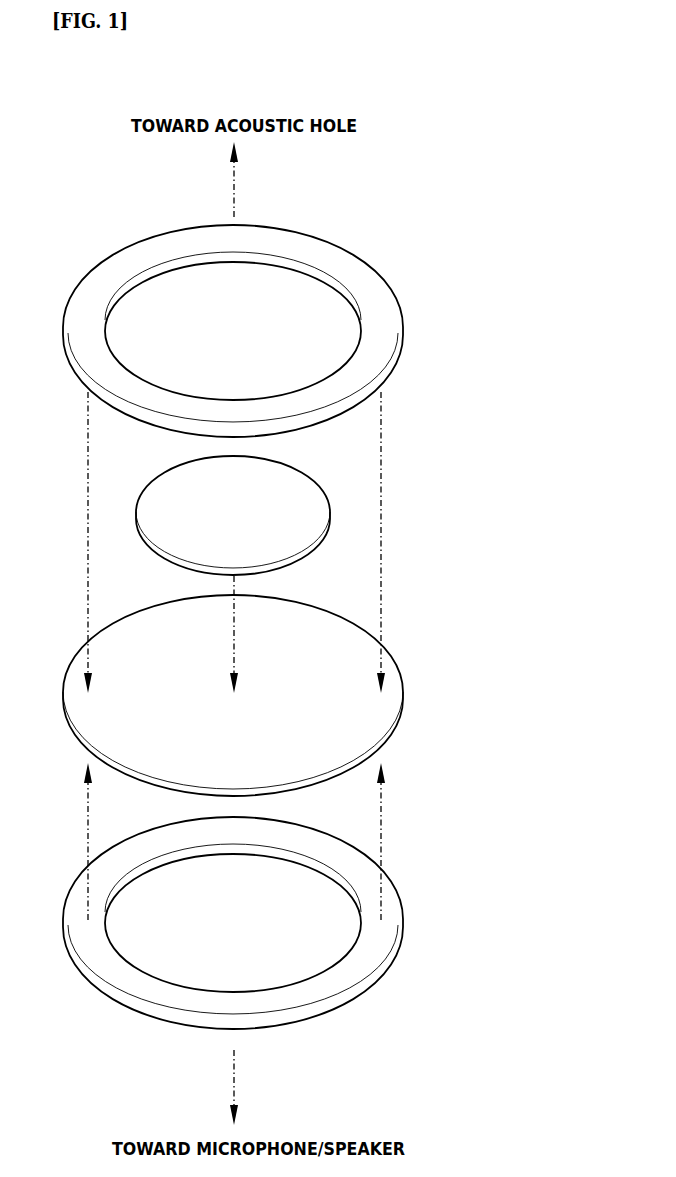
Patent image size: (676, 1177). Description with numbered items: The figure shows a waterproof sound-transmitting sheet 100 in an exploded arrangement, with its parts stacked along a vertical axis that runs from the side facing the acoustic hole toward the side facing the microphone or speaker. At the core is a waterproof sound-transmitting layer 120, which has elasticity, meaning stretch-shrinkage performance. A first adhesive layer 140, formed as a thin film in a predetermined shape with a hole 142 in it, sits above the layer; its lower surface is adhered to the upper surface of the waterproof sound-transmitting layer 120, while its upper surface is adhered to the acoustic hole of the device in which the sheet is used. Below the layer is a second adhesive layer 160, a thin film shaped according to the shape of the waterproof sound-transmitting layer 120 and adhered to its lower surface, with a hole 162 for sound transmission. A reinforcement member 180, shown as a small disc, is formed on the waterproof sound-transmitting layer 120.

The waterproof sound-transmitting sheet 100 is at (314, 620).
The waterproof sound-transmitting layer 120 is at (404, 697).
The first adhesive layer 140 is at (280, 323).
The hole 142 is at (305, 293).
The second adhesive layer 160 is at (280, 924).
The hole 162 is at (310, 948).
The reinforcement member 180 is at (332, 512).